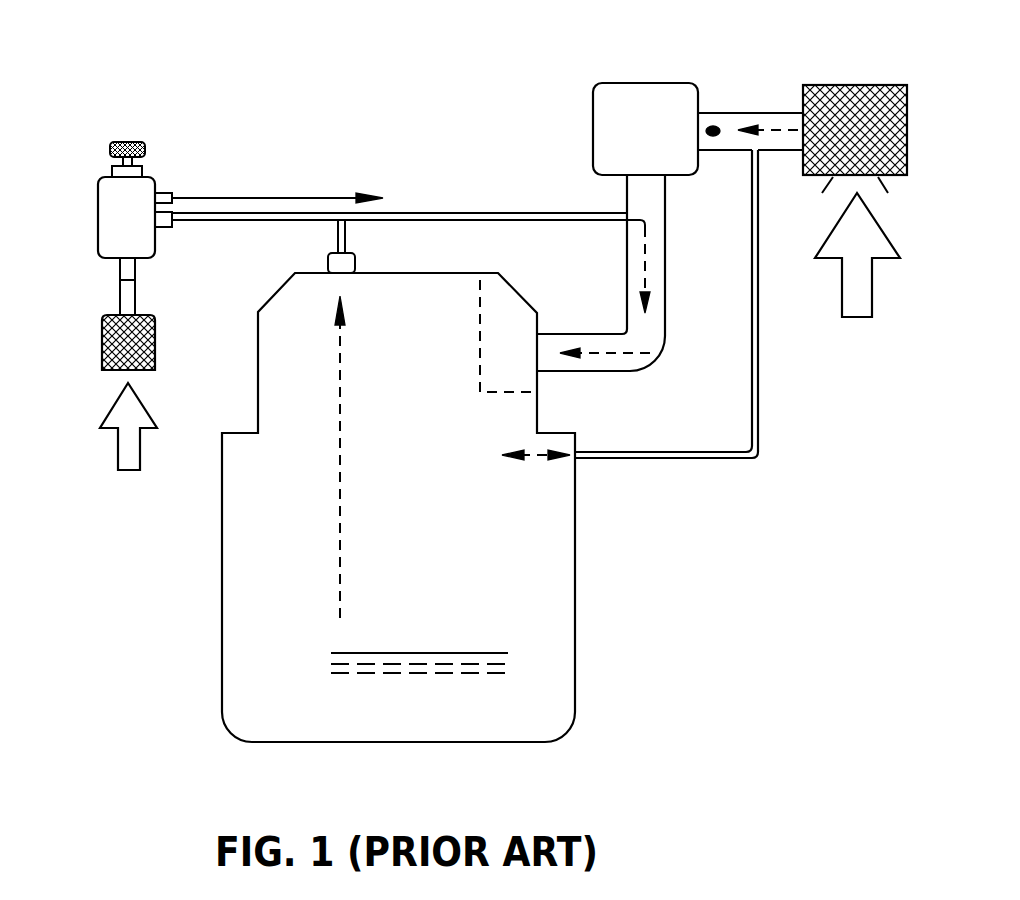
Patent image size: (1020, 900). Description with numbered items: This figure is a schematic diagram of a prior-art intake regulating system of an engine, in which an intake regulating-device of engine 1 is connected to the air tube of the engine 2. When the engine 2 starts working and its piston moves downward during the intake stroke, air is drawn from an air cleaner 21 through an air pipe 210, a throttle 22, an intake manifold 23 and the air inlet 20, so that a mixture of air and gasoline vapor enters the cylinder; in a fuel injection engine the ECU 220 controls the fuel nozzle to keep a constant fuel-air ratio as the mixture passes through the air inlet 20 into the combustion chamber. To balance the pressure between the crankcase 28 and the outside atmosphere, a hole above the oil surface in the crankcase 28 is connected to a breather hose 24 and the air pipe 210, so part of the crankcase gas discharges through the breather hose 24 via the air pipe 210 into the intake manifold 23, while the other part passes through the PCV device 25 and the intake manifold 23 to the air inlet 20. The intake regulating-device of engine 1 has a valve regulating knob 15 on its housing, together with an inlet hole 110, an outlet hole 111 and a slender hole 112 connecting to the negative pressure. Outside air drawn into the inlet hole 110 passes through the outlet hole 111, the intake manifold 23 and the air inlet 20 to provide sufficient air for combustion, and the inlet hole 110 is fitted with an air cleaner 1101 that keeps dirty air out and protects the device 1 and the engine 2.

The intake regulating-device of engine 1 is at (137, 229).
The engine 2 is at (205, 660).
The valve regulating knob 15 is at (127, 142).
The air inlet 20 is at (488, 315).
The air cleaner 21 is at (863, 84).
The throttle 22 is at (648, 100).
The intake manifold 23 is at (655, 347).
The breather hose 24 is at (757, 388).
The PCV device 25 is at (355, 258).
The crankcase 28 is at (518, 575).
The inlet hole 110 is at (120, 267).
The outlet hole 111 is at (168, 223).
The slender hole 112 is at (172, 197).
The air pipe 210 is at (752, 113).
The ECU 220 is at (717, 133).
The air cleaner 1101 is at (102, 360).